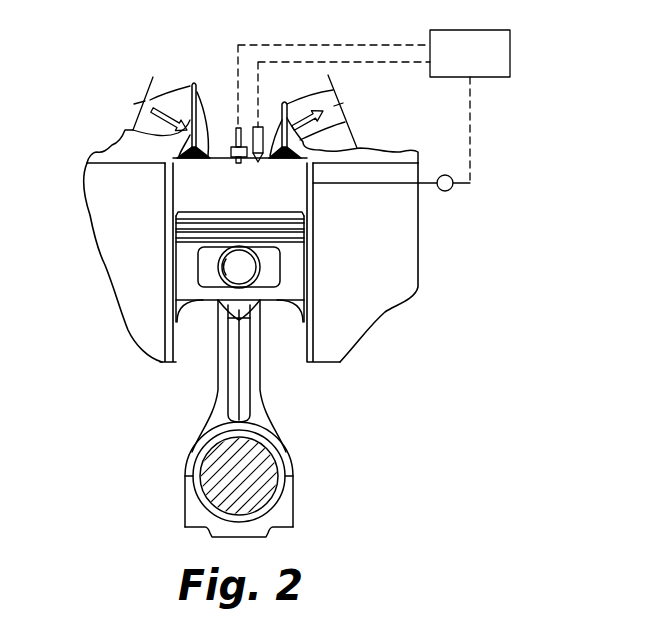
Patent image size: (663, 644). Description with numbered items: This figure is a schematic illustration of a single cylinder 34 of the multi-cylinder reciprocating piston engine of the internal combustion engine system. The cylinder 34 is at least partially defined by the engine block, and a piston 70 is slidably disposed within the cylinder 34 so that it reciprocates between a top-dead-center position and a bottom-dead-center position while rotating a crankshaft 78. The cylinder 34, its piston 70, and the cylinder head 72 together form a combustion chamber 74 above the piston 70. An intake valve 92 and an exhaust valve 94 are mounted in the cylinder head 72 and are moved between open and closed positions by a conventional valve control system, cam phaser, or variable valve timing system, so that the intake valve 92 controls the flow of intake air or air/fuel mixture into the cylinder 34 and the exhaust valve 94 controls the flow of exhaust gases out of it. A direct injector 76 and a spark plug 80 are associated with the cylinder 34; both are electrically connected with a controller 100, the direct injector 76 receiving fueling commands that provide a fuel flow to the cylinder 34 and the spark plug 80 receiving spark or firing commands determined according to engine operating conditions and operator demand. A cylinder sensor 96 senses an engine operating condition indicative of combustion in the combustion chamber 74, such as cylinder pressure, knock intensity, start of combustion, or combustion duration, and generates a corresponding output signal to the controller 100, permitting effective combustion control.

The cylinder 34 is at (510, 180).
The piston 70 is at (292, 258).
The cylinder head 72 is at (158, 168).
The combustion chamber 74 is at (297, 198).
The direct injector 76 is at (265, 127).
The crankshaft 78 is at (260, 454).
The spark plug 80 is at (235, 128).
The intake valve 92 is at (188, 120).
The exhaust valve 94 is at (352, 147).
The cylinder sensor 96 is at (449, 191).
The controller 100 is at (487, 64).